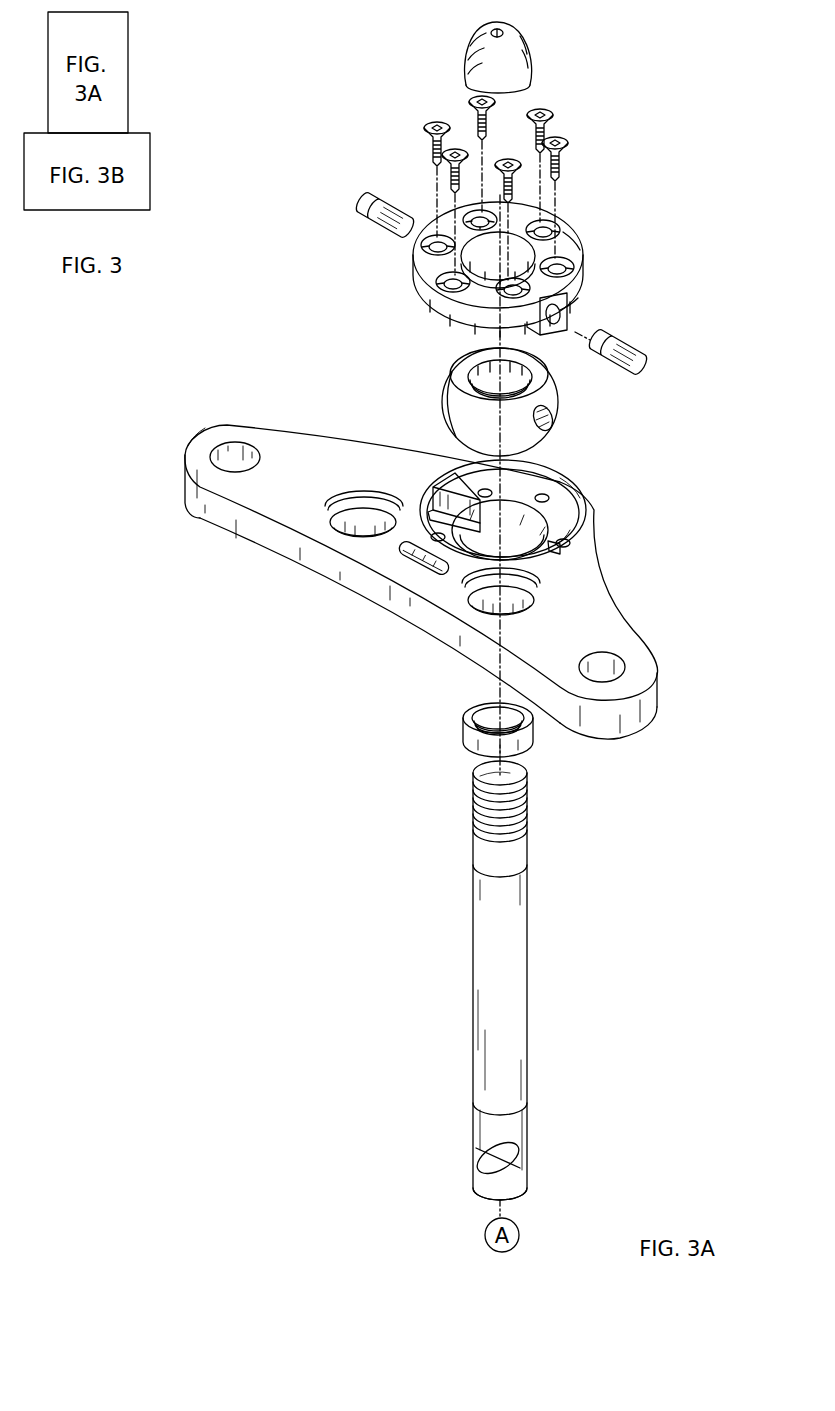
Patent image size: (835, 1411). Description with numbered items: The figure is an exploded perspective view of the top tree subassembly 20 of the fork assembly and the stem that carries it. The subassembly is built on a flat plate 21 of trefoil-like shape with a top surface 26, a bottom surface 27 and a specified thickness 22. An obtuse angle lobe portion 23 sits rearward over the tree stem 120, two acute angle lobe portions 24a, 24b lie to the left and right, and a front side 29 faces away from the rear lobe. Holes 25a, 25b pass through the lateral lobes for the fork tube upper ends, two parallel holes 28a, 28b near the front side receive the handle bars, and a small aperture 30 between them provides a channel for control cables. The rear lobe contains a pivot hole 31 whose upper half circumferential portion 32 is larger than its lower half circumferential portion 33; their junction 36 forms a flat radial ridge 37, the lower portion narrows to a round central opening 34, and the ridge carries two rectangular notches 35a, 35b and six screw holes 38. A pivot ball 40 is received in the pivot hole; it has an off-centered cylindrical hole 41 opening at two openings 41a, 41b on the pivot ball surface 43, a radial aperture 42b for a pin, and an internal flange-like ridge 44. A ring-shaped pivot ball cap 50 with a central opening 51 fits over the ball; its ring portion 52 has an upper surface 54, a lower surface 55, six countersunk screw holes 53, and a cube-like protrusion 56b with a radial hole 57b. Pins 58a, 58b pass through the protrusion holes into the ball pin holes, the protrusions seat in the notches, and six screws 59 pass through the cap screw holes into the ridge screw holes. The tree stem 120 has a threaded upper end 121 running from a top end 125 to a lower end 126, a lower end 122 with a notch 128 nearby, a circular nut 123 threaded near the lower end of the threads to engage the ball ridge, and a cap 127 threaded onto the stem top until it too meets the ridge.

The top tree subassembly 20 is at (404, 566).
The flat plate 21 is at (600, 578).
The thickness 22 is at (198, 503).
The obtuse angle lobe portion 23 is at (577, 487).
The acute angle lobe portion 24a is at (658, 715).
The acute angle lobe portion 24b is at (202, 430).
The hole 25a is at (615, 662).
The hole 25b is at (232, 441).
The top surface 26 is at (610, 616).
The bottom surface 27 is at (327, 583).
The parallel hole 28a is at (477, 597).
The parallel hole 28b is at (328, 521).
The front side 29 is at (390, 598).
The small aperture 30 is at (427, 572).
The pivot hole 31 is at (518, 503).
The upper half circumferential portion 32 is at (527, 478).
The lower half circumferential portion 33 is at (553, 530).
The round central opening 34 is at (543, 520).
The rectangular notch 35a is at (553, 548).
The rectangular notch 35b is at (443, 498).
The junction 36 is at (567, 543).
The flat radial ridge 37 is at (430, 521).
The screw holes 38 is at (430, 538).
The pivot ball 40 is at (503, 394).
The off-centered cylindrical hole 41 is at (533, 376).
The opening 41a is at (481, 369).
The opening 41b is at (468, 378).
The round aperture 42b is at (554, 414).
The pivot ball surface 43 is at (444, 393).
The flange-like ridge 44 is at (482, 362).
The pivot ball cap 50 is at (508, 272).
The central opening 51 is at (538, 254).
The ring portion 52 is at (563, 232).
The screw holes 53 is at (440, 280).
The upper surface 54 is at (546, 218).
The lower surface 55 is at (583, 293).
The cube-like protrusion 56b is at (577, 327).
The radial hole 57b is at (554, 322).
The pin 58a is at (378, 197).
The pin 58b is at (628, 339).
The screws 59 is at (548, 107).
The tree stem 120 is at (442, 978).
The upper end 121 is at (528, 798).
The lower end 122 is at (530, 1184).
The circular nut 123 is at (465, 738).
The top end 125 is at (528, 773).
The lower end 126 is at (528, 821).
The cap 127 is at (522, 44).
The notch 128 is at (480, 1152).